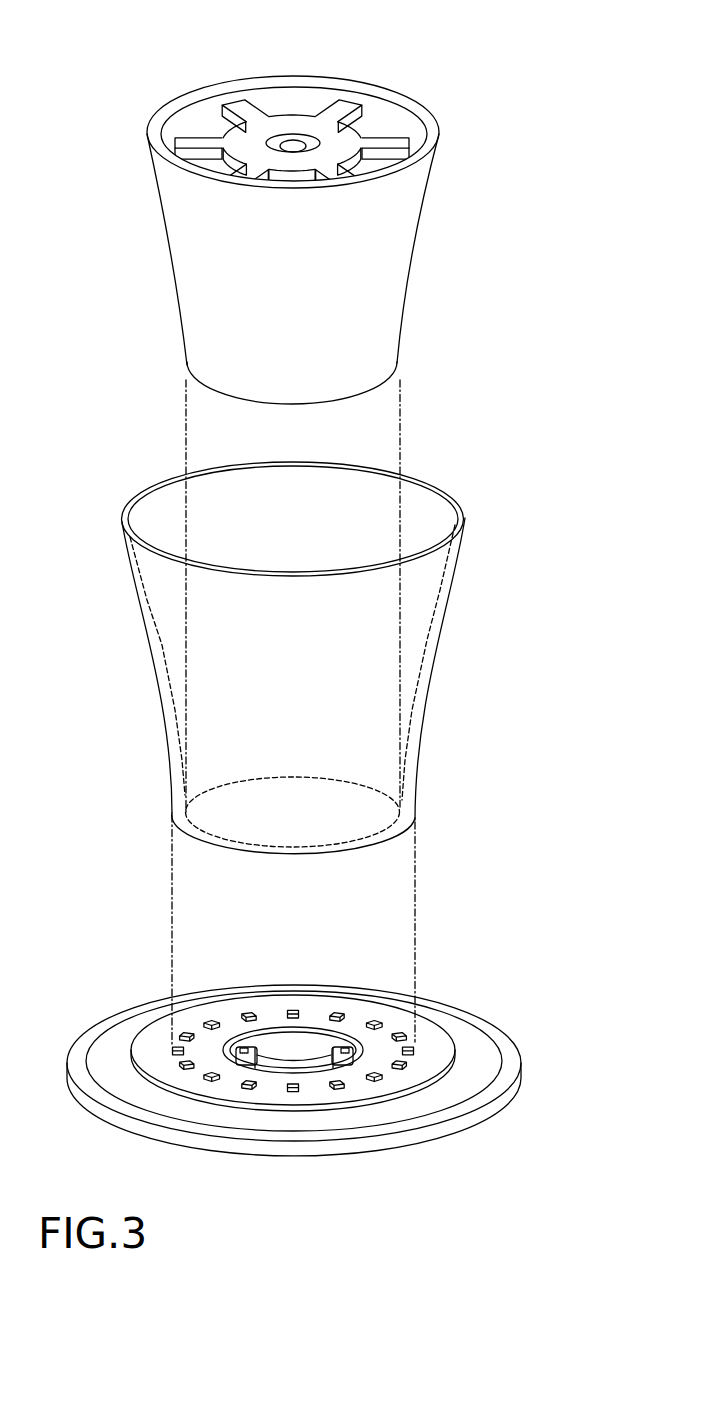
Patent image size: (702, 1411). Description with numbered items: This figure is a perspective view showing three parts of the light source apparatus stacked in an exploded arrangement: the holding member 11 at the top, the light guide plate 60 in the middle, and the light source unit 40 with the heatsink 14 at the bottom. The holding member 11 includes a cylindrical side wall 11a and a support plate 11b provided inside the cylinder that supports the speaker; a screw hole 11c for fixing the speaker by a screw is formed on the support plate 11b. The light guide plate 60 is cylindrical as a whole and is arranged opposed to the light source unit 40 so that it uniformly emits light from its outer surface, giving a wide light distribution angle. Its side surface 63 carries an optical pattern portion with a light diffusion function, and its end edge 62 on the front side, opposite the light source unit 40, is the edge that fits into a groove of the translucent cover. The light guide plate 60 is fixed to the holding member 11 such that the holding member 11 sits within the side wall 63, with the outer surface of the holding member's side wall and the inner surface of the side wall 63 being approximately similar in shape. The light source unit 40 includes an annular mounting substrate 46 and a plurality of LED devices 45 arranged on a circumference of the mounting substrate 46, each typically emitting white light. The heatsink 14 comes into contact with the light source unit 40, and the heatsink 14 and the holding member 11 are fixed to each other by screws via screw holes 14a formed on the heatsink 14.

The holding member 11 is at (335, 212).
The cylindrical side wall 11a is at (407, 98).
The support plate 11b is at (332, 125).
The screw hole 11c is at (293, 143).
The light guide plate 60 is at (331, 658).
The end edge 62 is at (465, 512).
The side surface 63 is at (417, 723).
The heatsink 14 is at (336, 1099).
The screw holes 14a is at (245, 1047).
The light source unit 40 is at (293, 1124).
The LED devices 45 is at (343, 1088).
The mounting substrate 46 is at (368, 1085).